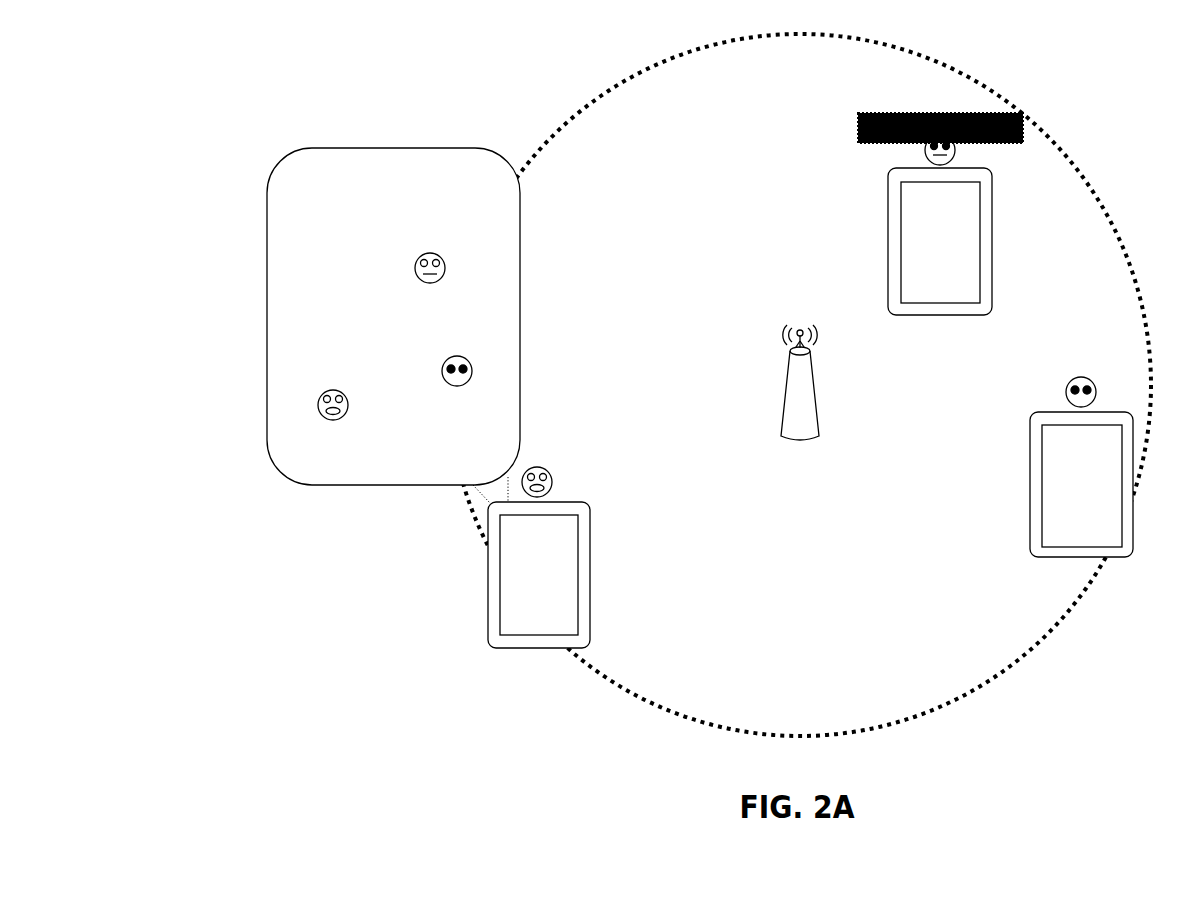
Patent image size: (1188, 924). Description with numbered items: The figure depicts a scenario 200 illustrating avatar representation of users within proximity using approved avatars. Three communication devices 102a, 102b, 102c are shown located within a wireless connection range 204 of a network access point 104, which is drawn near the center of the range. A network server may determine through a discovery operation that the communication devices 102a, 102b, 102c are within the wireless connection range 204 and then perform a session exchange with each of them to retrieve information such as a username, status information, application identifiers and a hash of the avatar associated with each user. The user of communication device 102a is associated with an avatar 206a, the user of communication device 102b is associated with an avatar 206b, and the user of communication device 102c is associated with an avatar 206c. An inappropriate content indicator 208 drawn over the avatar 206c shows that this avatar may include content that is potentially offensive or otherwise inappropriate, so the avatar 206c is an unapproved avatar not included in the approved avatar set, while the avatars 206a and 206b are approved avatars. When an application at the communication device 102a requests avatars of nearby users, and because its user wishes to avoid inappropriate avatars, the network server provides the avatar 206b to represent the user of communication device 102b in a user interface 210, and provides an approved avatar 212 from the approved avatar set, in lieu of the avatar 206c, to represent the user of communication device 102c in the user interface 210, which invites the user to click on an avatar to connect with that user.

The scenario 200 is at (396, 54).
The wireless connection range 204 is at (1115, 230).
The user interface 210 is at (391, 148).
The approved avatar 212 is at (446, 265).
The communication device 102a is at (513, 588).
The communication device 102b is at (1056, 497).
The communication device 102c is at (914, 254).
The avatar 206a is at (543, 469).
The avatar 206b is at (1081, 376).
The avatar 206c is at (922, 155).
The inappropriate content indicator 208 is at (880, 113).
The network access point 104 is at (813, 388).